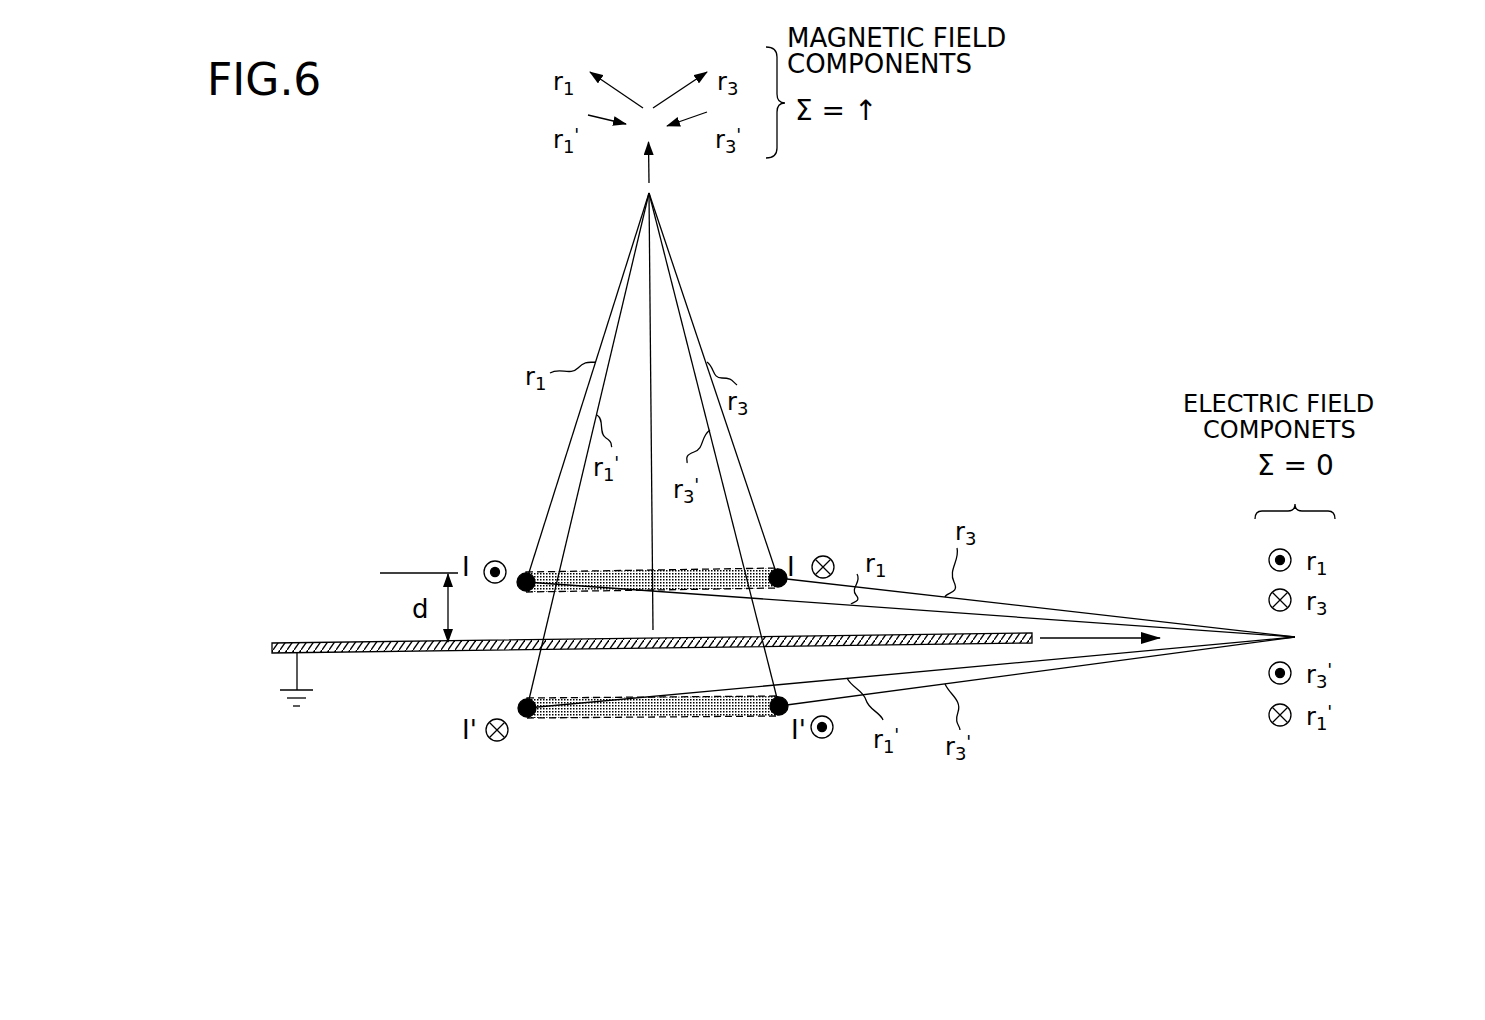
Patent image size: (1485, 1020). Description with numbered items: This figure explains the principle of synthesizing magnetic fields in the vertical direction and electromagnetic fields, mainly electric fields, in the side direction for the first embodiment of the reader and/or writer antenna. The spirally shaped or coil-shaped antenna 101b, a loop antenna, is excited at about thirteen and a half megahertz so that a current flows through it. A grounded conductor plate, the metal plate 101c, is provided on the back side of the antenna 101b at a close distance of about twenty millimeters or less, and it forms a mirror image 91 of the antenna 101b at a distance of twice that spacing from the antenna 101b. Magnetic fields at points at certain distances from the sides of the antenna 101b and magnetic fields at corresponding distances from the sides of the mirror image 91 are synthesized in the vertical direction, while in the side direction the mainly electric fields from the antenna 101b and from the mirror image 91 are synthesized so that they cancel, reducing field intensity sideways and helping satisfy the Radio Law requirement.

The antenna 101b is at (558, 607).
The conductor plate (metal plate) 101c is at (304, 643).
The mirror image 91 is at (577, 720).